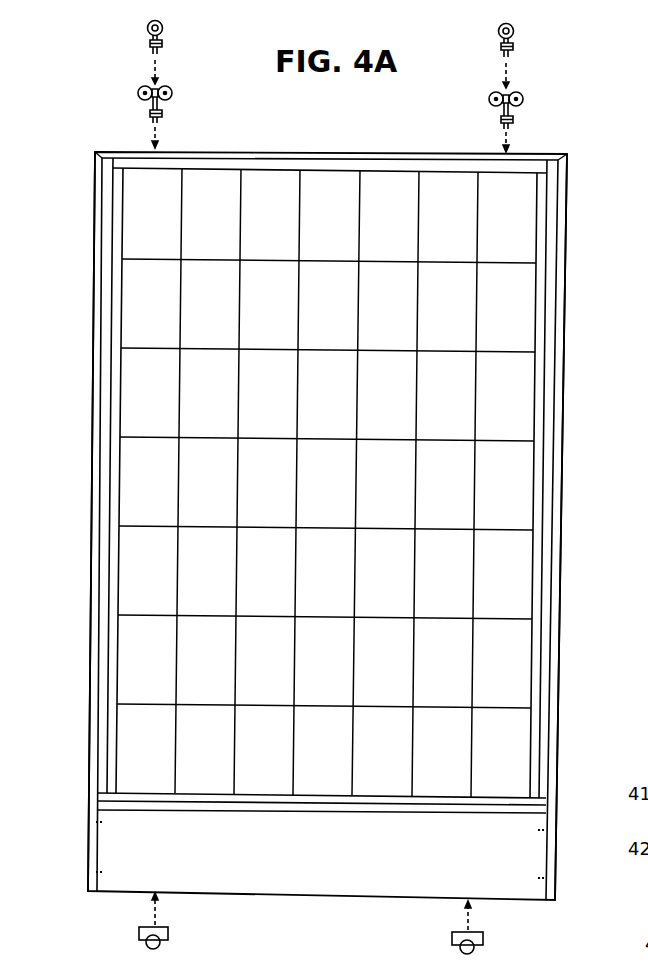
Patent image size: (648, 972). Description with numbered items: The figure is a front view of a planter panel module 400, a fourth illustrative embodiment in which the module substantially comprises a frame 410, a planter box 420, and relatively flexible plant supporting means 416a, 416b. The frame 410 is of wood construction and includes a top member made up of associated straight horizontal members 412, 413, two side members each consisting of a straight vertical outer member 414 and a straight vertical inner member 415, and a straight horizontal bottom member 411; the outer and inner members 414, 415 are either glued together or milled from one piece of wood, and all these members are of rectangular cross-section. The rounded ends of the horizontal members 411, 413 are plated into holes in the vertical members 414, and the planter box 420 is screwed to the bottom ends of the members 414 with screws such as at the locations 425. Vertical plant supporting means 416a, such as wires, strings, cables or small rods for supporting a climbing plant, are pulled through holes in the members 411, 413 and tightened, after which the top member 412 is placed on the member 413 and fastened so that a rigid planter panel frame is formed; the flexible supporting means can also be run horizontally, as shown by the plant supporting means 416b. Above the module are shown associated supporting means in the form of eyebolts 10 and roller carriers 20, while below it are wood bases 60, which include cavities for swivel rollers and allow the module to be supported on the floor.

The eyebolt 10 is at (163, 45).
The roller carrier 20 is at (172, 104).
The base 60 is at (222, 941).
The planter panel module 400 is at (355, 128).
The frame 410 is at (222, 152).
The straight horizontal bottom member 411 is at (304, 795).
The straight horizontal member 412 is at (375, 155).
The straight horizontal member 413 is at (372, 169).
The straight vertical outer member 414 is at (98, 437).
The straight vertical inner member 415 is at (108, 495).
The plant supporting means 416a is at (475, 403).
The plant supporting means 416b is at (515, 351).
The planter box 420 is at (500, 852).
The screw location 425 is at (92, 822).